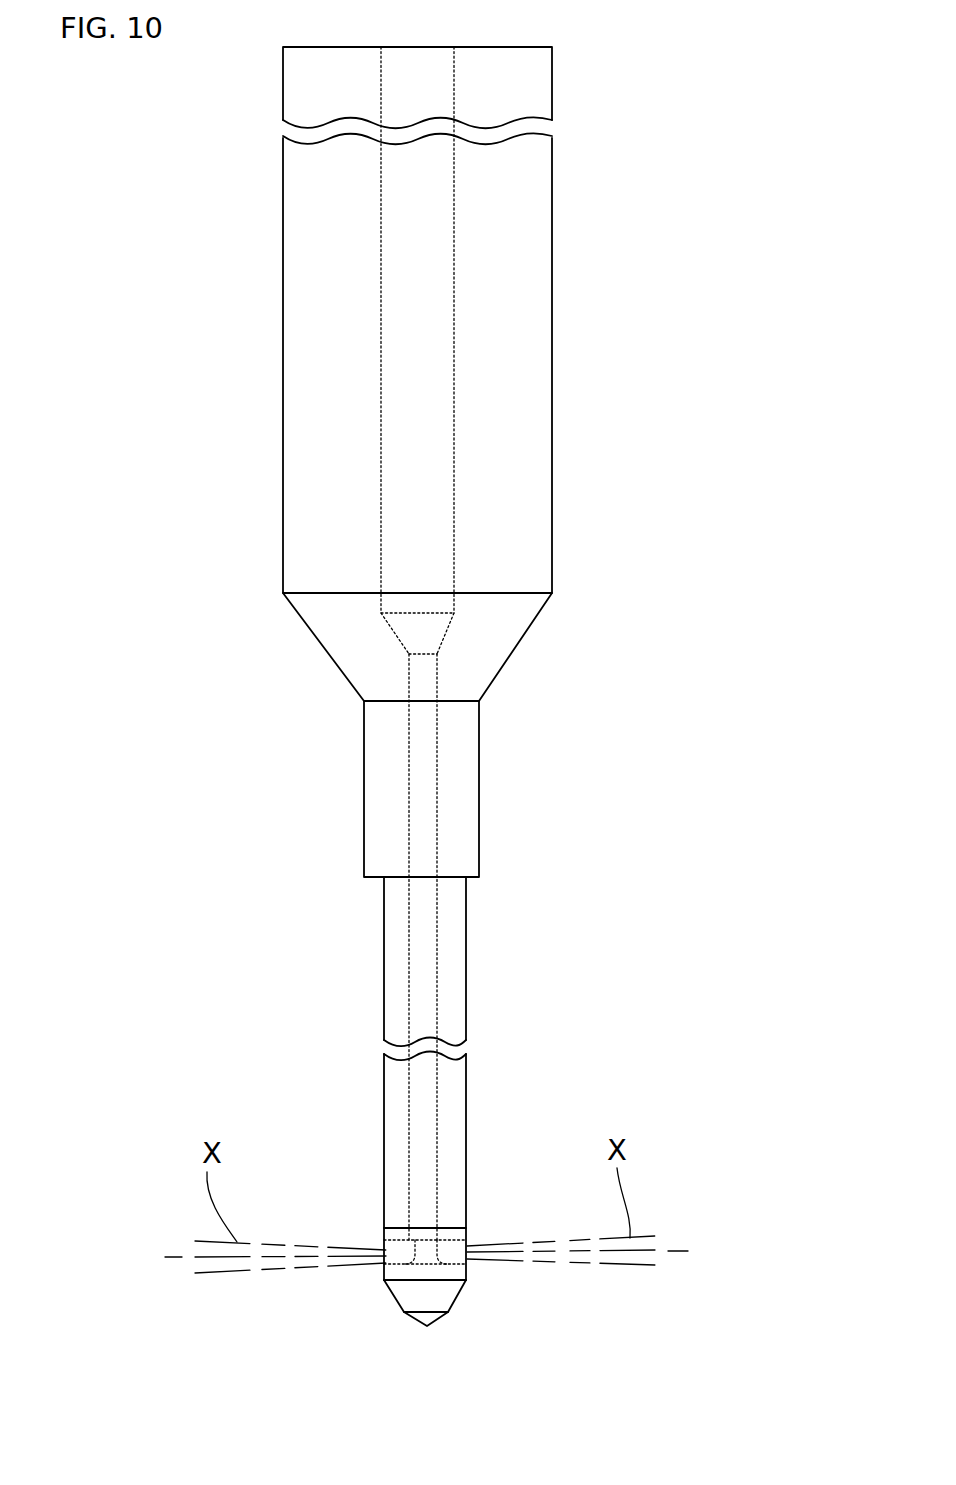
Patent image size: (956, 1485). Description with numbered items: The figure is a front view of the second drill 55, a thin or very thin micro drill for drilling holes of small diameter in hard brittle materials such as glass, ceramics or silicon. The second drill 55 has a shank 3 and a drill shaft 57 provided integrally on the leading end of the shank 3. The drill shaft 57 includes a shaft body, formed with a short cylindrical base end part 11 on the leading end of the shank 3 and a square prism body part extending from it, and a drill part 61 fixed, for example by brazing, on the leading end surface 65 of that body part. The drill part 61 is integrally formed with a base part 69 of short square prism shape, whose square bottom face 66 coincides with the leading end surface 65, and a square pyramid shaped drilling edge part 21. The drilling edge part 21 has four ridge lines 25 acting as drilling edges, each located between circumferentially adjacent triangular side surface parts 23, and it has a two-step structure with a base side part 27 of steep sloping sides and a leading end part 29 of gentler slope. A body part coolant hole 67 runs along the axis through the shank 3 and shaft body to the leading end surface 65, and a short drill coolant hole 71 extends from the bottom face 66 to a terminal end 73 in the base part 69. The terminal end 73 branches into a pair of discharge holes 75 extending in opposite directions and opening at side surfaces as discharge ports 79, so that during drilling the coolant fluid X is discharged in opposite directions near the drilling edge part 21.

The second drill 55 is at (160, 122).
The shank 3 is at (276, 489).
The base end part 11 is at (385, 717).
The drill shaft 57 is at (343, 913).
The body part coolant hole 67 is at (420, 382).
The discharge holes 75 is at (404, 1238).
The bottom face 66 is at (388, 1227).
The leading end surface 65 is at (386, 1232).
The drill coolant hole 71 is at (440, 1238).
The discharge ports 79 is at (380, 1242).
The drill part 61 is at (363, 1271).
The terminal end 73 is at (417, 1263).
The base part 69 is at (443, 1270).
The base side part 27 is at (442, 1290).
The drilling edge part 21 is at (388, 1315).
The ridge lines 25 is at (393, 1303).
The triangular side surface parts 23 is at (413, 1313).
The leading end part 29 is at (430, 1326).